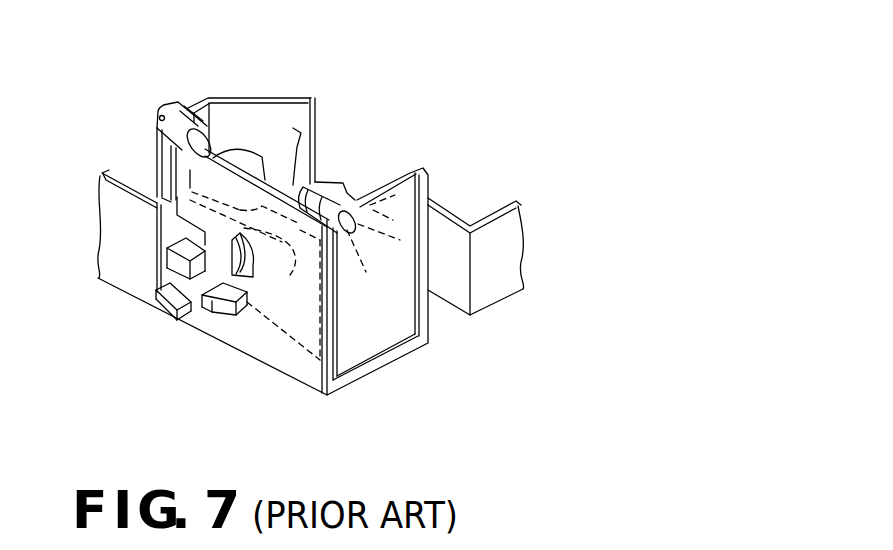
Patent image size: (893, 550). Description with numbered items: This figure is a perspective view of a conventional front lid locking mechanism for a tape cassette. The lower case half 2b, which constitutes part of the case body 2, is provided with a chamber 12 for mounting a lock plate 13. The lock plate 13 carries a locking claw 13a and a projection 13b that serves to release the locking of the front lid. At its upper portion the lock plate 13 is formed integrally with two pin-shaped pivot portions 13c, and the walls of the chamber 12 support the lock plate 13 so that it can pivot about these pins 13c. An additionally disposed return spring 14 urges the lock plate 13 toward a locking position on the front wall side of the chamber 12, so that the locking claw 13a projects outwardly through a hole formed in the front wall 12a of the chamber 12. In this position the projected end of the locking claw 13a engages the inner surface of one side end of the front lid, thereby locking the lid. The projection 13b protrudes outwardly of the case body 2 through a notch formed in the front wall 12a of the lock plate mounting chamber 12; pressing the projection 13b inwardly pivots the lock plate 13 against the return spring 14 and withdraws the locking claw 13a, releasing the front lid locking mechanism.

The case body 2 is at (540, 94).
The lower case half 2b is at (495, 293).
The chamber 12 is at (252, 122).
The front wall 12a is at (222, 150).
The lock plate 13 is at (288, 348).
The locking claw 13a is at (226, 305).
The projection 13b is at (160, 303).
The pivot portions 13c is at (172, 113).
The return spring 14 is at (302, 127).